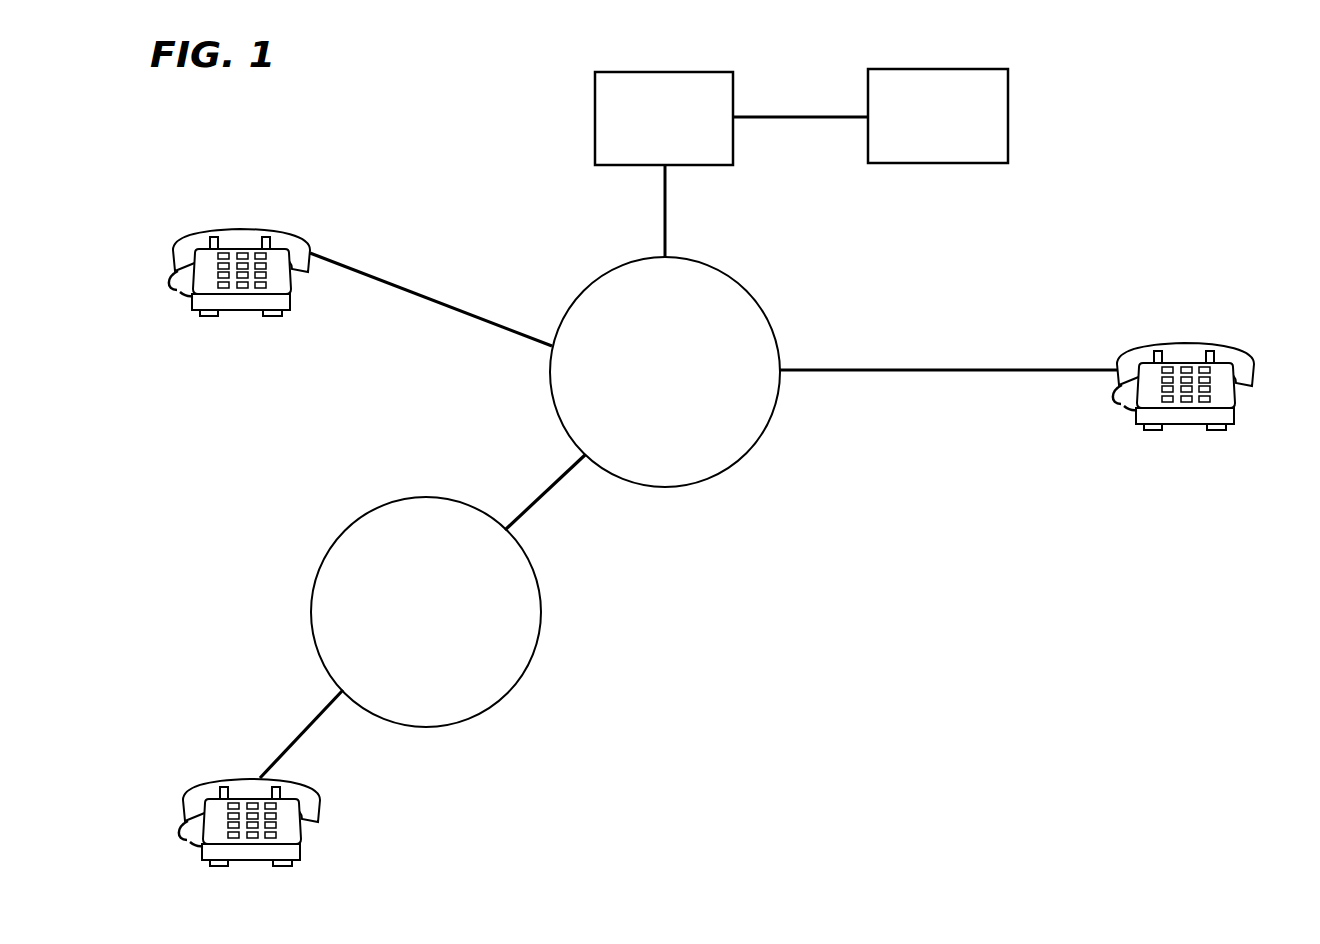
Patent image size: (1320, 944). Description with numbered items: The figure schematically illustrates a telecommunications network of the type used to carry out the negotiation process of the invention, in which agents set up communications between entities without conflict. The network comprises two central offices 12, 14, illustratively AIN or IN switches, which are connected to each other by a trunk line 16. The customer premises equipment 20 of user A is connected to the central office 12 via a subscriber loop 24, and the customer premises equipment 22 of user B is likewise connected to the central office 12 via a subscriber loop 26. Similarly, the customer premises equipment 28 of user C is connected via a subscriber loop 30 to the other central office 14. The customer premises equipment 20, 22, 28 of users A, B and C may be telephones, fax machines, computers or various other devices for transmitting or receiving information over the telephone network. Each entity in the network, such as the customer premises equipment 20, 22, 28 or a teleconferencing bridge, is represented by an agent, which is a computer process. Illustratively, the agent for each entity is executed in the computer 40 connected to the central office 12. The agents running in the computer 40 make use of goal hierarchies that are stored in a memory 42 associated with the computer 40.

The central office 12 is at (697, 485).
The central office 14 is at (358, 518).
The trunk line 16 is at (540, 497).
The customer premises equipment 20 is at (1235, 347).
The customer premises equipment 22 is at (262, 228).
The subscriber loop 24 is at (946, 369).
The subscriber loop 26 is at (418, 290).
The customer premises equipment 28 is at (207, 780).
The subscriber loop 30 is at (313, 730).
The computer 40 is at (595, 97).
The memory 42 is at (868, 98).